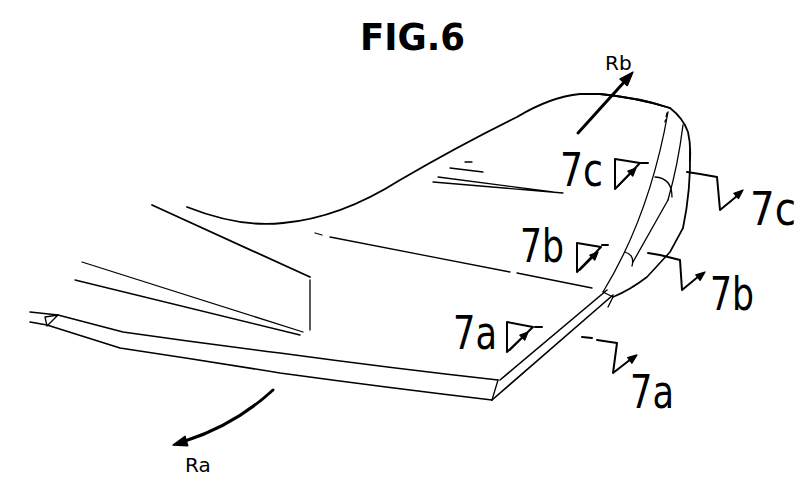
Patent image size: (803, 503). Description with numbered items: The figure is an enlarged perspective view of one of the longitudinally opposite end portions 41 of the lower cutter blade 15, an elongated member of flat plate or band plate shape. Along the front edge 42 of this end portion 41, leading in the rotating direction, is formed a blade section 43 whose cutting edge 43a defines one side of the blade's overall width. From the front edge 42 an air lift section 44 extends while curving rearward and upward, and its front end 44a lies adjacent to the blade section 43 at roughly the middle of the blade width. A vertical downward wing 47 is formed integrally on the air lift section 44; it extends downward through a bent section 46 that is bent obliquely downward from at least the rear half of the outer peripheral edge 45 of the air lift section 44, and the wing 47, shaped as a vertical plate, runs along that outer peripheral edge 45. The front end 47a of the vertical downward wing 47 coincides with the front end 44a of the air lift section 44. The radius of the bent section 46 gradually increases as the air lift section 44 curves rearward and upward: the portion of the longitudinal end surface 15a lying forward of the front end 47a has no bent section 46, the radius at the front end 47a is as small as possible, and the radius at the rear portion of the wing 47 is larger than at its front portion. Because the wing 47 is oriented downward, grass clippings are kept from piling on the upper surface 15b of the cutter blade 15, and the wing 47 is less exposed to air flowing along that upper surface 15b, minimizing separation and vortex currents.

The lower cutter blade 15 is at (200, 180).
The longitudinal end surface 15a is at (532, 367).
The upper surface 15b is at (165, 327).
The longitudinally opposite end portion 41 is at (362, 315).
The front edge 42 is at (40, 323).
The blade section 43 is at (395, 380).
The cutting edge 43a is at (452, 398).
The air lift section 44 is at (635, 113).
The front end of the air lift section 44a is at (657, 103).
The outer peripheral edge 45 is at (667, 132).
The bent section 46 is at (680, 153).
The vertical downward wing 47 is at (683, 229).
The front end of the vertical downward wing 47a is at (610, 305).